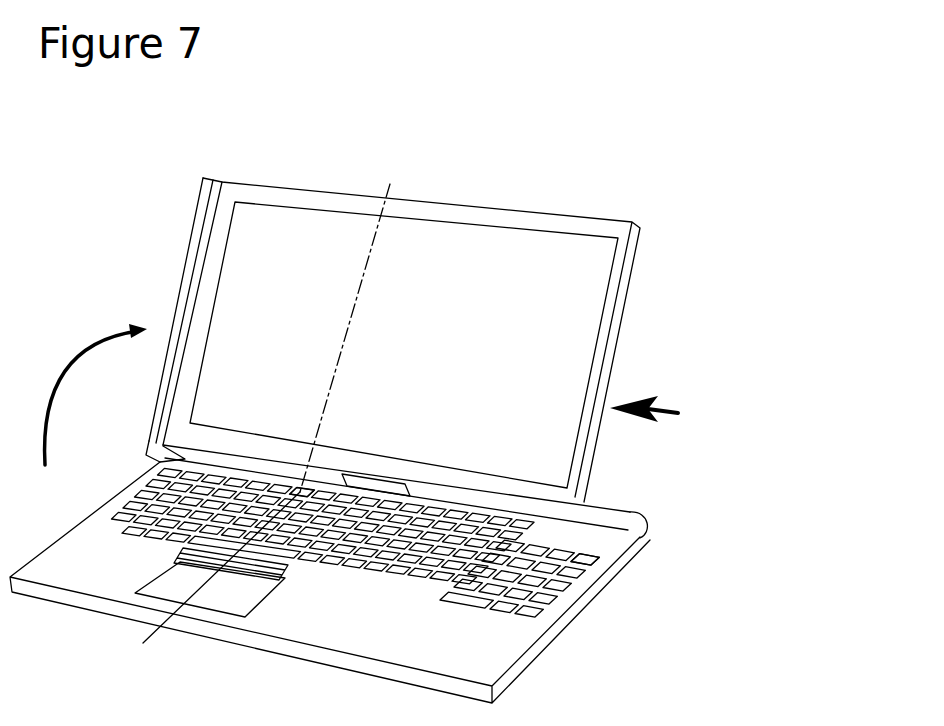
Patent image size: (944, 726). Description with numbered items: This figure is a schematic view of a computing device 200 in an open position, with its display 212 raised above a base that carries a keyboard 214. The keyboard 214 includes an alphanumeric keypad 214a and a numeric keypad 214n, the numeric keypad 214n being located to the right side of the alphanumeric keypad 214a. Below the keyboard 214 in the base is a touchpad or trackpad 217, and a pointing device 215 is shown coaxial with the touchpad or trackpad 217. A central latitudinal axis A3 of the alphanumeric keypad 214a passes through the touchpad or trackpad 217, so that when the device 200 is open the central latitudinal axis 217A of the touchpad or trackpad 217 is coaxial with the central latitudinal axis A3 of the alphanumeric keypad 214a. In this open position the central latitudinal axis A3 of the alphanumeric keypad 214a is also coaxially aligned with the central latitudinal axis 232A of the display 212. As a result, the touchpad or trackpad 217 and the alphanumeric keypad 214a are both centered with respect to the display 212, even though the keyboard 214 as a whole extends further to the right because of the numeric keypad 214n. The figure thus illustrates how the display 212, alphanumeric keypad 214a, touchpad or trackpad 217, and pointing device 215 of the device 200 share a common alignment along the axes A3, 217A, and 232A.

The computing device 200 is at (553, 202).
The display 212 is at (545, 369).
The keyboard 214 is at (397, 594).
The alphanumeric keypad 214a is at (300, 491).
The numeric keypad 214n is at (593, 555).
The pointing device 215 is at (200, 527).
The touchpad or trackpad 217 is at (295, 566).
The central latitudinal axis of the alphanumeric keypad A3 is at (284, 419).
The central latitudinal axis of the touchpad or trackpad 217A is at (284, 419).
The central latitudinal axis of the display 232A is at (284, 419).